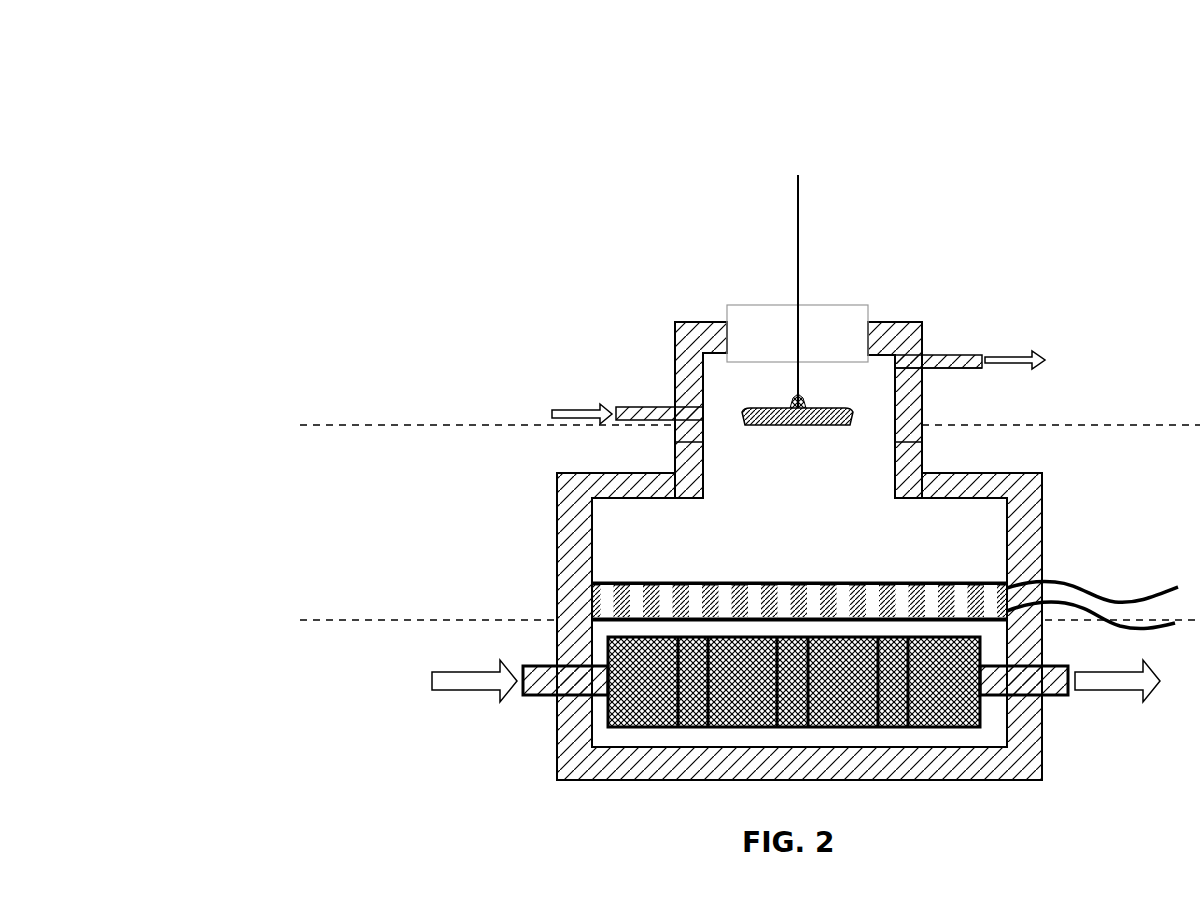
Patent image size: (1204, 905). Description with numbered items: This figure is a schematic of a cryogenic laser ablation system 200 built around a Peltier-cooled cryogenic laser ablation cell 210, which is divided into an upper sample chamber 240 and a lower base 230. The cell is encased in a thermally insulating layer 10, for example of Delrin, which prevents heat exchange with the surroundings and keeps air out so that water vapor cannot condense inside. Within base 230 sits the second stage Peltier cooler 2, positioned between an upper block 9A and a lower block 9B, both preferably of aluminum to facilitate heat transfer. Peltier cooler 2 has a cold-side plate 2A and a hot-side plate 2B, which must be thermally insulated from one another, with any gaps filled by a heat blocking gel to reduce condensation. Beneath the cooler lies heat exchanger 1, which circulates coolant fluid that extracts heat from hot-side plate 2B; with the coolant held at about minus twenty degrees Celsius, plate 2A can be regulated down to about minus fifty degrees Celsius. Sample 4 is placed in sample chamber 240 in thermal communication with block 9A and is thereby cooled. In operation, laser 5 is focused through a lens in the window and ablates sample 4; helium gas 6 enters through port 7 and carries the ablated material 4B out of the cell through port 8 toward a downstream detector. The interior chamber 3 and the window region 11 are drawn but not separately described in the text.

The cryogenic laser ablation system 200 is at (970, 224).
The sample chamber 240 is at (298, 295).
The base 230 is at (298, 439).
The cryogenic laser ablation cell 210 is at (615, 781).
The thermally insulating layer 10 is at (1027, 492).
The block 9A is at (895, 537).
The block 9B is at (995, 725).
The processing chamber 3 is at (828, 366).
The window 11 is at (783, 328).
The laser 5 is at (795, 207).
The sample 4 is at (782, 400).
The ablated material 4B is at (967, 380).
The port 7 is at (628, 388).
The port 8 is at (966, 346).
The helium gas 6 is at (560, 440).
The Peltier cooler 2 is at (613, 604).
The plate 2A is at (620, 580).
The plate 2B is at (620, 622).
The heat exchanger 1 is at (638, 713).